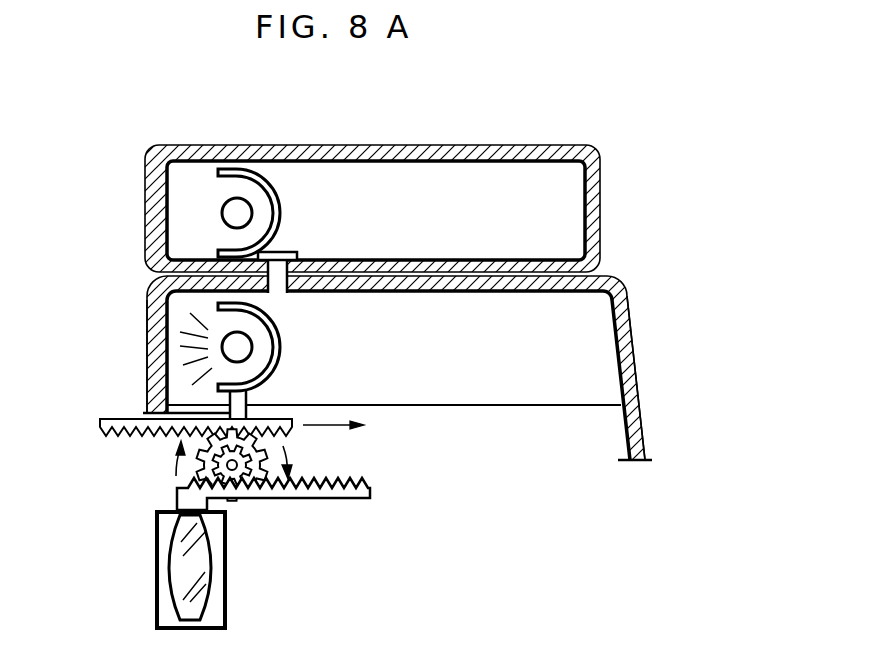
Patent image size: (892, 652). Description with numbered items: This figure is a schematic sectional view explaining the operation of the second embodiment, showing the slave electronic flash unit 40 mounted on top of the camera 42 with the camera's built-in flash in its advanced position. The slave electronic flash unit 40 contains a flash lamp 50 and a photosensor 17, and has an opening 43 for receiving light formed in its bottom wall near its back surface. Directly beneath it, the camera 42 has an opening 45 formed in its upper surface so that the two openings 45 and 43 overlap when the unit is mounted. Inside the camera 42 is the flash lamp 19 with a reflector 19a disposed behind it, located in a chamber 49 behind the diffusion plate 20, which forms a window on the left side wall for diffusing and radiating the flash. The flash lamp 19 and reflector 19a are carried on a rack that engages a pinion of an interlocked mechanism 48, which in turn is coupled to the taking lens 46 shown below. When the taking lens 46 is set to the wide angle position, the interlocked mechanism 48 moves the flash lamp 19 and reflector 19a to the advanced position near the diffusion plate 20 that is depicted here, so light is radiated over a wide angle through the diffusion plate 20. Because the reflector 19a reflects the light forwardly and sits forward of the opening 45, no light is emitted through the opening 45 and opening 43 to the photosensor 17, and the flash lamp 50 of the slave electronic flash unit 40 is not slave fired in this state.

The slave electronic flash unit 40 is at (519, 132).
The camera 42 is at (650, 305).
The flash lamp 50 is at (222, 216).
The photosensor 17 is at (272, 252).
The opening 43 is at (289, 253).
The opening 45 is at (280, 293).
The flash lamp 19 is at (221, 343).
The reflector 19a is at (279, 373).
The diffusion plate 20 is at (148, 380).
The chamber 49 is at (598, 368).
The taking lens 46 is at (175, 567).
The interlocked mechanism 48 is at (297, 543).